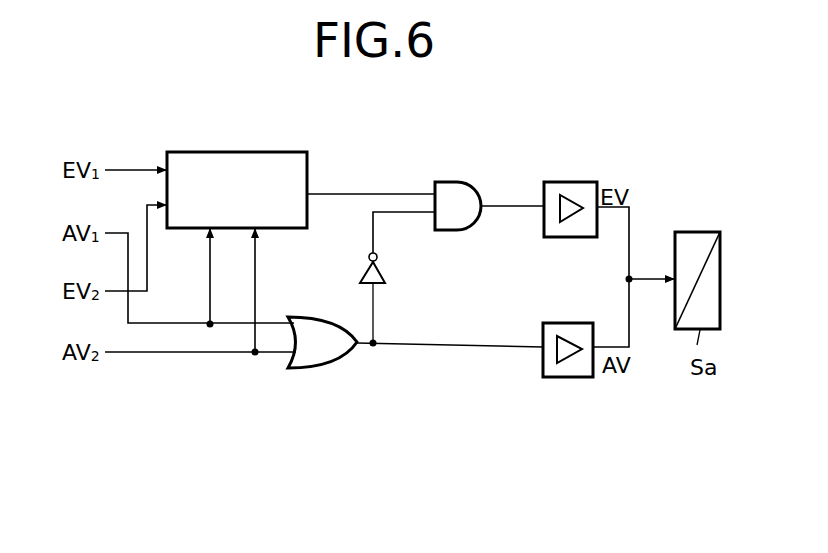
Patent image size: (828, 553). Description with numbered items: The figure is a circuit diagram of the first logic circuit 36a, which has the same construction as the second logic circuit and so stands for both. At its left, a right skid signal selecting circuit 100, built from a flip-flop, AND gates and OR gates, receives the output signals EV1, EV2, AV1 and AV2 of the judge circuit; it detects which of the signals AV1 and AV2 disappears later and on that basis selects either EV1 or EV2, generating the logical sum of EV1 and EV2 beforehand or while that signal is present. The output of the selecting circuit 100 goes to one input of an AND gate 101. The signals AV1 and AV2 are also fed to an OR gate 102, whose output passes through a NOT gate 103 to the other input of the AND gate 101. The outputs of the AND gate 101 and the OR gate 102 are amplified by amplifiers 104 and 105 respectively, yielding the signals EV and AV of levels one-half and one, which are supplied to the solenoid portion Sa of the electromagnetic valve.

The first logic circuit 36a is at (606, 127).
The right skid signal selecting circuit 100 is at (215, 152).
The AND gate 101 is at (455, 182).
The OR gate 102 is at (313, 370).
The NOT gate 103 is at (386, 272).
The amplifier 104 is at (572, 182).
The amplifier 105 is at (570, 323).